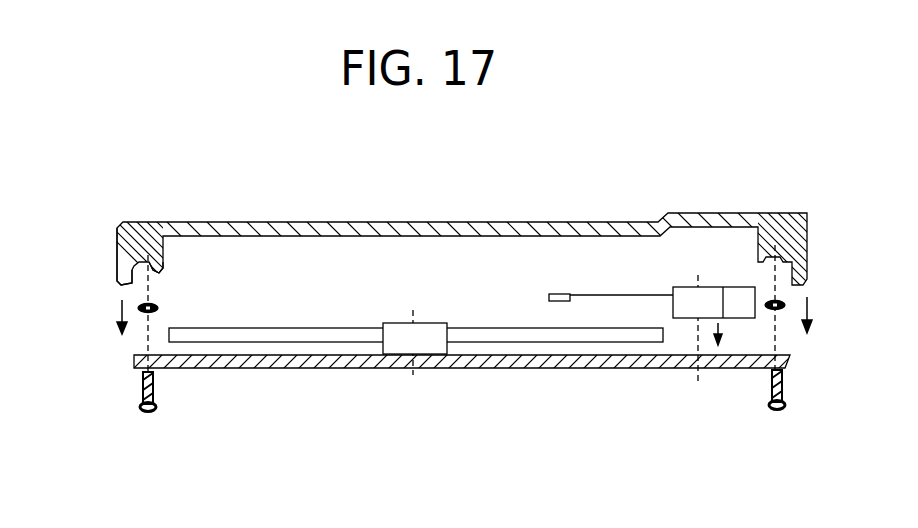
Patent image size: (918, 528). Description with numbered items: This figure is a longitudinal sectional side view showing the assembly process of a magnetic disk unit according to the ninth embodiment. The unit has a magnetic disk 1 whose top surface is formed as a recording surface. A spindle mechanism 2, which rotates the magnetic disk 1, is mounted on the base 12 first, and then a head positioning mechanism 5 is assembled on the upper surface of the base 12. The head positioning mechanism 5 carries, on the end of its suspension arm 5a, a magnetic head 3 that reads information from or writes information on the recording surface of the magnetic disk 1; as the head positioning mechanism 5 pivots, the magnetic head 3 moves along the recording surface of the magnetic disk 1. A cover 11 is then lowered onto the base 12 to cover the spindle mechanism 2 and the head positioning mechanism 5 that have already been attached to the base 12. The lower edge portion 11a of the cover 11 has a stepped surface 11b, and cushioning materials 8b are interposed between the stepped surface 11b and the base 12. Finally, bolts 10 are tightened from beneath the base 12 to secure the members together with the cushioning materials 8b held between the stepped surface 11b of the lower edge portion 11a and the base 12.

The magnetic disk 1 is at (482, 342).
The spindle mechanism 2 is at (398, 340).
The magnetic head 3 is at (558, 301).
The head positioning mechanism 5 is at (688, 318).
The suspension arm 5a is at (607, 295).
The cushioning material 8b is at (160, 309).
The bolt 10 is at (148, 414).
The cover 11 is at (257, 222).
The lower edge portion 11a is at (117, 259).
The stepped surface 11b is at (156, 268).
The base 12 is at (290, 368).